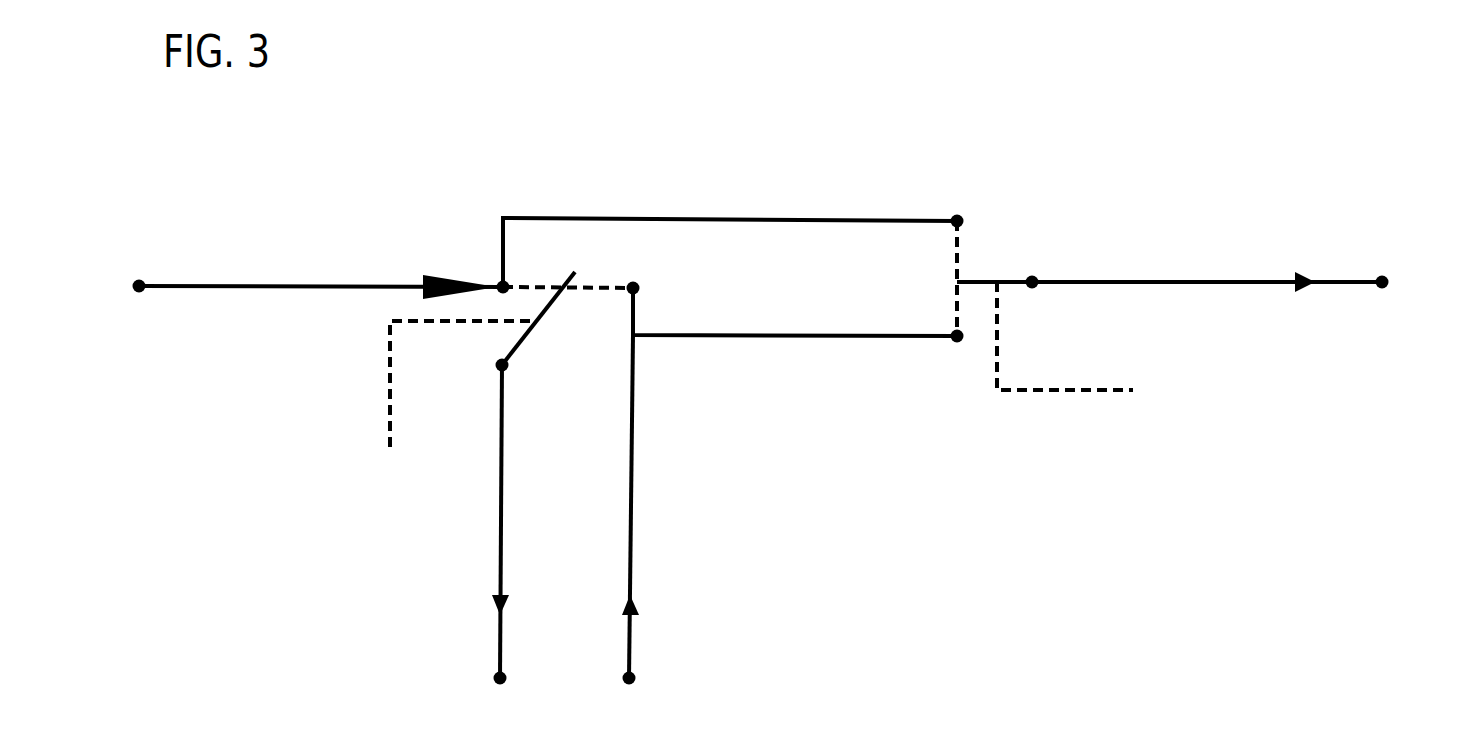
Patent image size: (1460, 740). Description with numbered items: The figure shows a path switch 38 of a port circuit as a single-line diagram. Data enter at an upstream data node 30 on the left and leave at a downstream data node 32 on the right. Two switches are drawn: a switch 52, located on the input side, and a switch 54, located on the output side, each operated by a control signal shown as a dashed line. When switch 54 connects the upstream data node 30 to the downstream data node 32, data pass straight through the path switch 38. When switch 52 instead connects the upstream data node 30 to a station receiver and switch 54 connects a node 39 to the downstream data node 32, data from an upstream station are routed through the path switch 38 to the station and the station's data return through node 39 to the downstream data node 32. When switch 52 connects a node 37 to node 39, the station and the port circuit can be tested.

The upstream data node 30 is at (139, 286).
The downstream data node 32 is at (1382, 282).
The node 37 is at (498, 678).
The path switch 38 is at (838, 178).
The node 39 is at (630, 678).
The switch 52 is at (530, 182).
The switch 54 is at (985, 190).